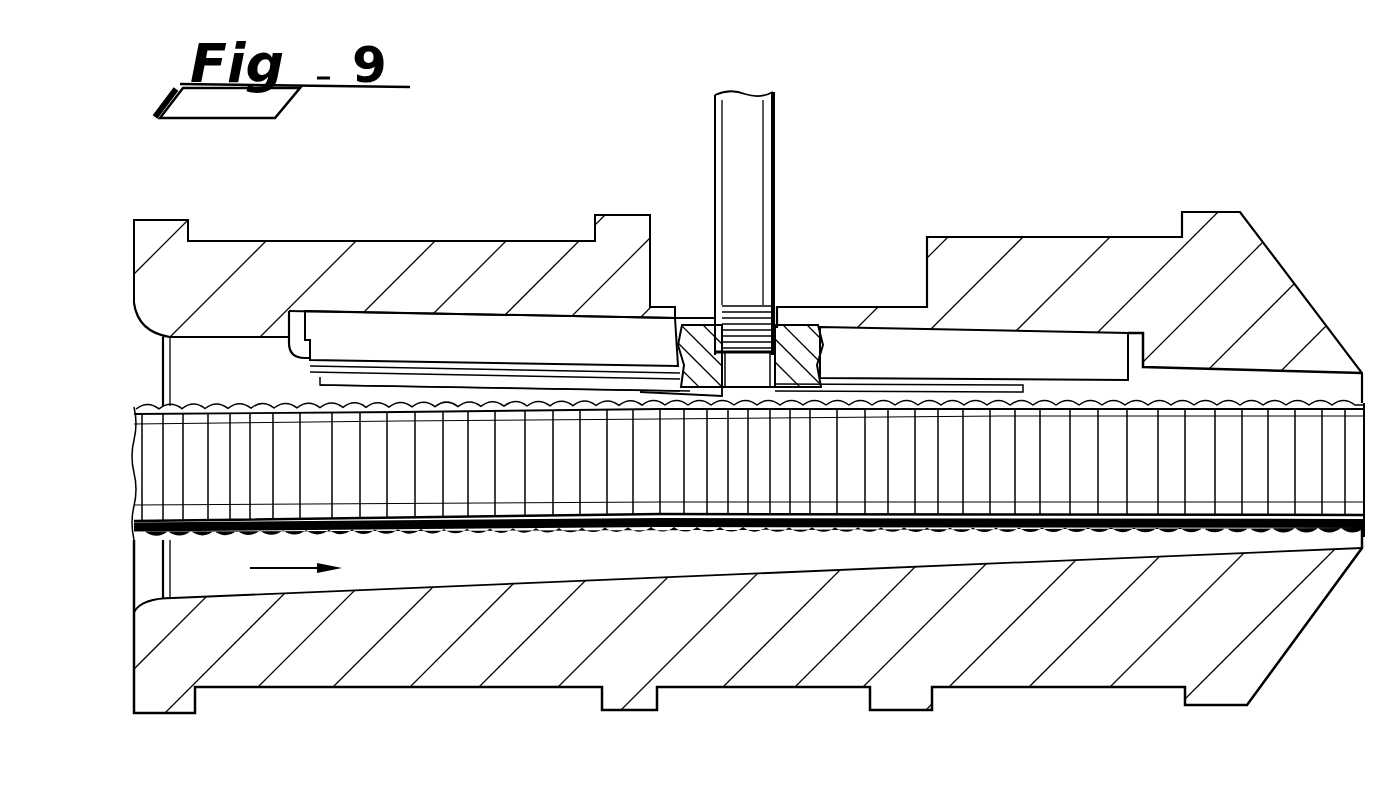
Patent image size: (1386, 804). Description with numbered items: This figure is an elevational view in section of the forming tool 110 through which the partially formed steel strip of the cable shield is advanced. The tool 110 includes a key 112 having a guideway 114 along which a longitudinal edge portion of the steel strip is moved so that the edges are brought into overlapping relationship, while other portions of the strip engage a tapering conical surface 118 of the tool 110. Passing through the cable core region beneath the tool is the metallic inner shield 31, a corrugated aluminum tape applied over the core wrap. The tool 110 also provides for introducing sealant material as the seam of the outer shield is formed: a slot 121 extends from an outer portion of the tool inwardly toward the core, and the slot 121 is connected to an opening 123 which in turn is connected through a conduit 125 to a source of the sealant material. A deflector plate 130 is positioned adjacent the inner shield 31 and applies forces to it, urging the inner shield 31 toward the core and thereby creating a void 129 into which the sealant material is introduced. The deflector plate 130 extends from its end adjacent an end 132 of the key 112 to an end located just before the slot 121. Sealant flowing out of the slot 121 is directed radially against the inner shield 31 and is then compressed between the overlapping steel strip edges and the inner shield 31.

The tool 110 is at (1040, 228).
The key 112 is at (1073, 335).
The guideway 114 is at (398, 362).
The tapering conical surface 118 is at (478, 582).
The slot 121 is at (752, 372).
The opening 123 is at (722, 328).
The conduit 125 is at (748, 142).
The void 129 is at (756, 392).
The deflector plate 130 is at (436, 398).
The end of key 132 is at (290, 318).
The inner shield 31 is at (250, 362).